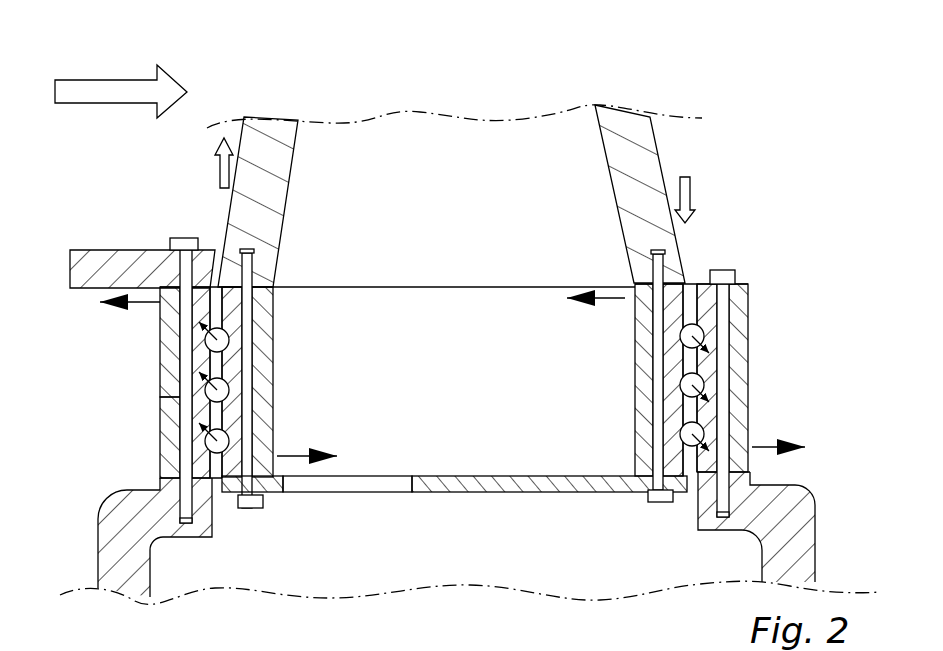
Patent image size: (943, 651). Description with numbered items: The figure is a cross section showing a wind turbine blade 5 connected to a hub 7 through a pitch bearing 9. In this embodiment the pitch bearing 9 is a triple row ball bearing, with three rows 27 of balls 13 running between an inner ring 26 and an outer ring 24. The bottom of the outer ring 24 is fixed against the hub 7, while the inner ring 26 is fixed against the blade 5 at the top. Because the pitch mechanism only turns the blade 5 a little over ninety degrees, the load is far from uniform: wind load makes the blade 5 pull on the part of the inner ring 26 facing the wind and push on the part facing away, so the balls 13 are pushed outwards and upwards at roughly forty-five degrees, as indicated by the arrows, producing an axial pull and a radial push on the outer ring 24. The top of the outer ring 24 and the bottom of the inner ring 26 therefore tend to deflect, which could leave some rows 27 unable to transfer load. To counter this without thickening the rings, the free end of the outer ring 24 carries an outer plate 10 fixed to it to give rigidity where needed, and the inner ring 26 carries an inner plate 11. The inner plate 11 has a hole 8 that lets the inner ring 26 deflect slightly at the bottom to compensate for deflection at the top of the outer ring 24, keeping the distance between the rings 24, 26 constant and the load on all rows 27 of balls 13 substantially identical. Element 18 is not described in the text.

The wind turbine blade 5 is at (637, 178).
The hub 7 is at (773, 507).
The hole 8 is at (333, 485).
The pitch bearing 9 is at (704, 342).
The outer plate 10 is at (133, 268).
The inner plate 11 is at (530, 480).
The balls 13 is at (693, 382).
The clamping ring 18 is at (168, 455).
The outer ring 24 is at (166, 308).
The inner ring 26 is at (268, 370).
The rows 27 is at (217, 441).